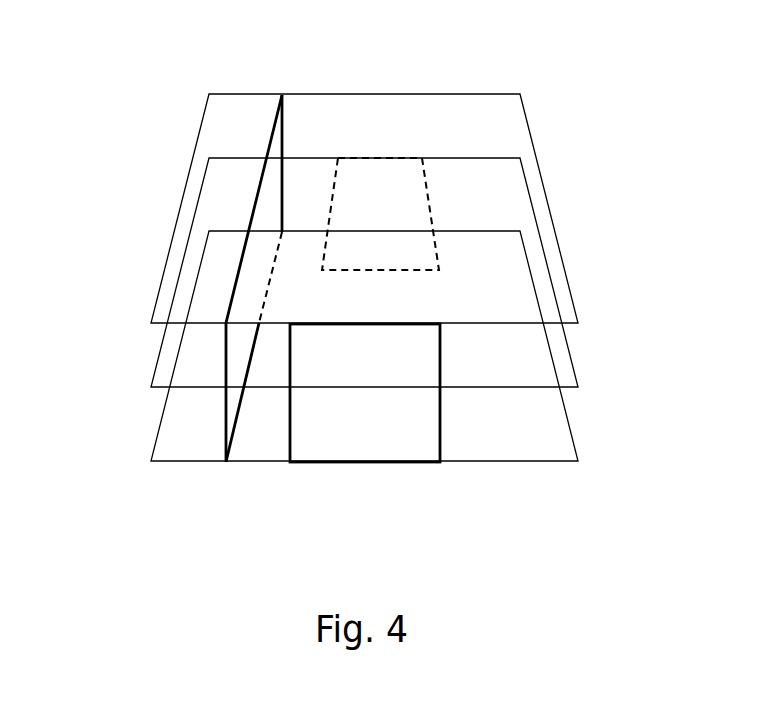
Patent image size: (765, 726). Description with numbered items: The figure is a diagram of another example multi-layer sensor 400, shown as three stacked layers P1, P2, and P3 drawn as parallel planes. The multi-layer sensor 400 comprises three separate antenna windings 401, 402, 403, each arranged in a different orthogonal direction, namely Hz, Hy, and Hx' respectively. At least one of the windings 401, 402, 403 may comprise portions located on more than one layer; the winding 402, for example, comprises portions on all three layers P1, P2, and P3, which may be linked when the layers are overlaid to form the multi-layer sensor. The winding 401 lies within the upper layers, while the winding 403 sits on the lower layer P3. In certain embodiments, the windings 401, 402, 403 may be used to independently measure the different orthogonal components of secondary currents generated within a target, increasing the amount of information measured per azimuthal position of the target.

The multi-layer sensor 400 is at (390, 243).
The antenna winding 401 is at (425, 178).
The antenna winding 402 is at (233, 292).
The antenna winding 403 is at (289, 427).
The layer P1 is at (378, 209).
The layer P2 is at (378, 273).
The layer P3 is at (378, 346).